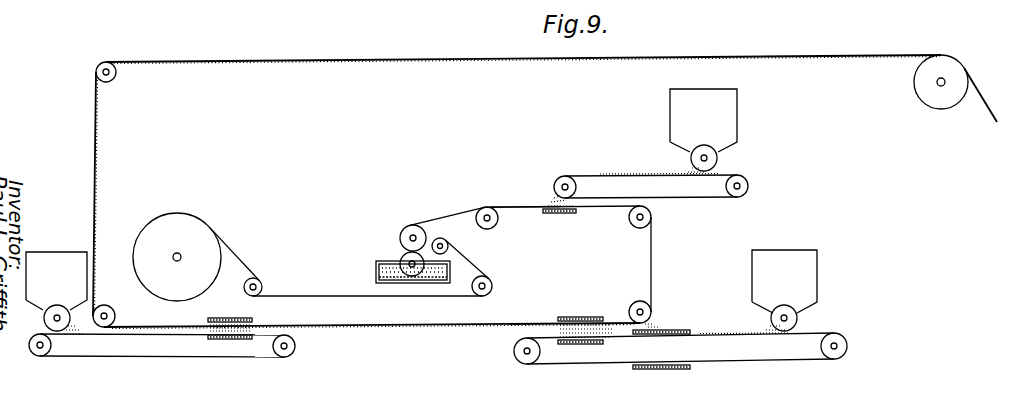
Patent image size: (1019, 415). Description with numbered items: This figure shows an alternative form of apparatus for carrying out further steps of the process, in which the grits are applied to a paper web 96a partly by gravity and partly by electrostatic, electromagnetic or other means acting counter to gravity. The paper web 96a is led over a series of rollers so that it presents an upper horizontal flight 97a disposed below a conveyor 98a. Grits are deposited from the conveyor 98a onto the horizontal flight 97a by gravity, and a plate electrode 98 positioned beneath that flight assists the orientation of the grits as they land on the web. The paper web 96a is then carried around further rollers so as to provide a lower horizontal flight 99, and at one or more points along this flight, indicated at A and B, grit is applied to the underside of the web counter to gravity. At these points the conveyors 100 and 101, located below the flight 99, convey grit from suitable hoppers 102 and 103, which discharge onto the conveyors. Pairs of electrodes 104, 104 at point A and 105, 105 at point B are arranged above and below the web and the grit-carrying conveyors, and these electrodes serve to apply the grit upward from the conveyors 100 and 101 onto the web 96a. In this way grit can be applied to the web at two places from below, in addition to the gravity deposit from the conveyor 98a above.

The paper web 96a is at (97, 133).
The horizontal flight 97a is at (523, 192).
The plate electrode 98 is at (560, 214).
The conveyor 98a is at (726, 174).
The horizontal flight 99 is at (377, 328).
The conveyor 100 is at (812, 332).
The conveyor 101 is at (72, 337).
The hopper 102 is at (810, 274).
The hopper 103 is at (53, 252).
The electrodes 104 is at (550, 340).
The electrodes 105 is at (225, 335).
The grit applying point A is at (609, 345).
The grit applying point B is at (208, 332).